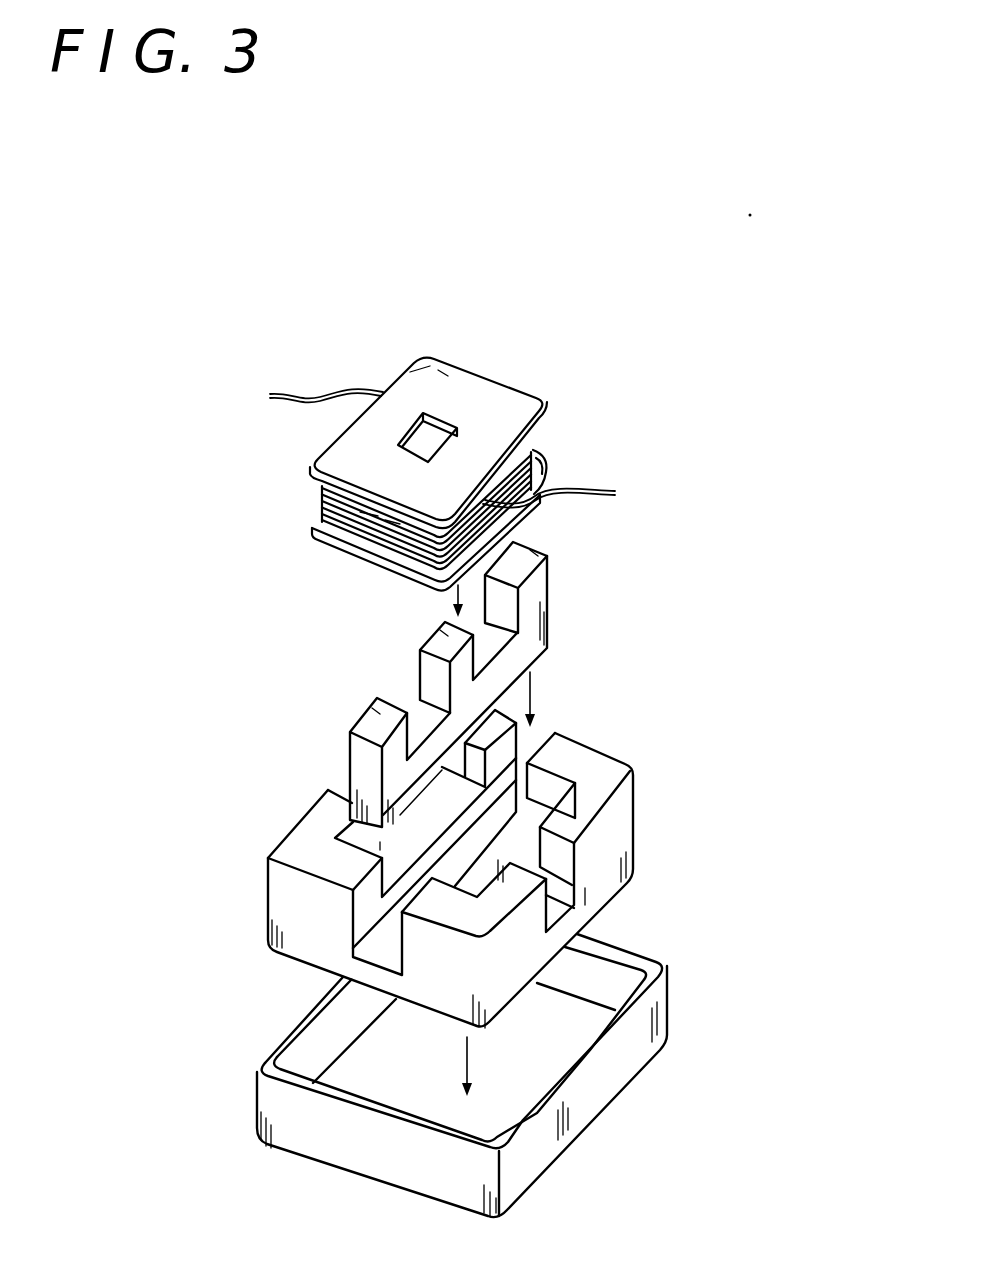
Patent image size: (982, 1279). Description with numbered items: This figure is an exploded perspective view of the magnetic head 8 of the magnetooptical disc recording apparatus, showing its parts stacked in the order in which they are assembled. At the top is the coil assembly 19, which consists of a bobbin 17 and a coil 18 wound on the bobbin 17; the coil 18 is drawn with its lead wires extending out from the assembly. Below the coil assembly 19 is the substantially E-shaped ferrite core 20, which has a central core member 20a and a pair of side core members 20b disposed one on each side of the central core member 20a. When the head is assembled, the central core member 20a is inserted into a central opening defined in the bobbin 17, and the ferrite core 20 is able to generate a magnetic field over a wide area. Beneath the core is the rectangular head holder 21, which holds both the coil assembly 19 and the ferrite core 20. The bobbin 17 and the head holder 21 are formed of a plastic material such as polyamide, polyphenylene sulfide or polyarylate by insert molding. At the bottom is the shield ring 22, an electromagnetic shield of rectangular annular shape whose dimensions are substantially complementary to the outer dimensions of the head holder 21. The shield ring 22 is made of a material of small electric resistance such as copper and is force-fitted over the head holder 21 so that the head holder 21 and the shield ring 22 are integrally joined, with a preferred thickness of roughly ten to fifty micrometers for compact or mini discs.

The magnetic head 8 is at (389, 450).
The bobbin 17 is at (482, 390).
The coil 18 is at (315, 389).
The coil assembly 19 is at (558, 398).
The ferrite core 20 is at (456, 675).
The central core member 20a is at (445, 633).
The side core members 20b is at (522, 553).
The head holder 21 is at (625, 838).
The shield ring 22 is at (618, 1075).